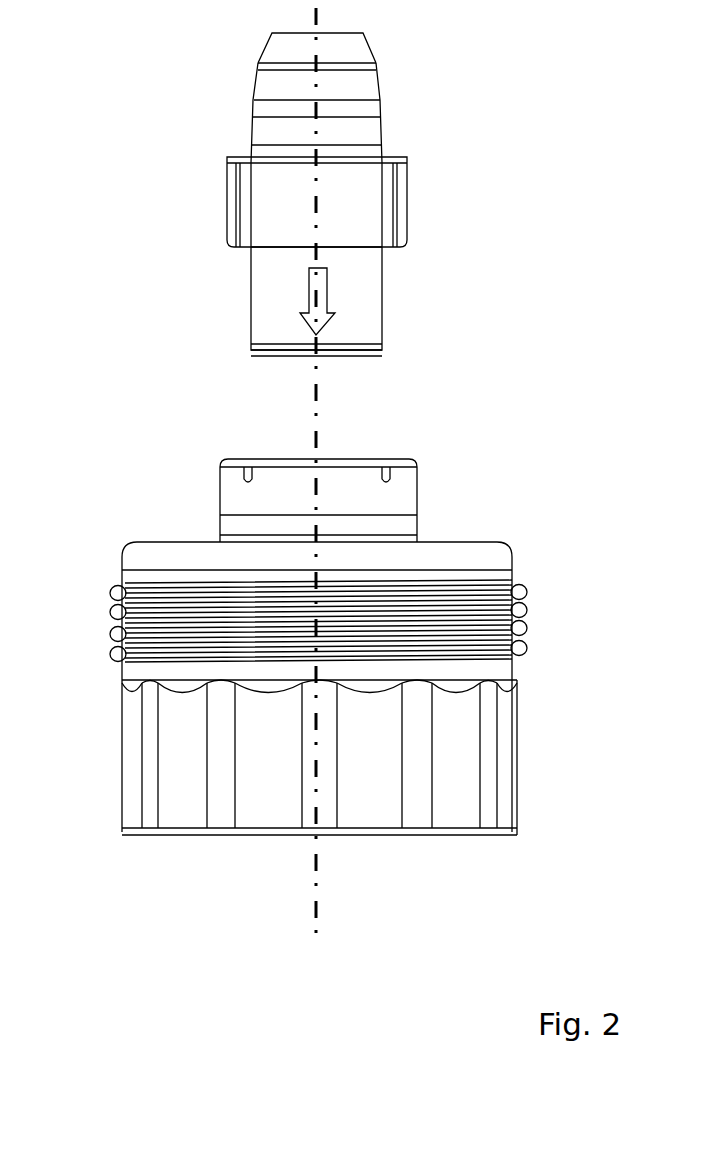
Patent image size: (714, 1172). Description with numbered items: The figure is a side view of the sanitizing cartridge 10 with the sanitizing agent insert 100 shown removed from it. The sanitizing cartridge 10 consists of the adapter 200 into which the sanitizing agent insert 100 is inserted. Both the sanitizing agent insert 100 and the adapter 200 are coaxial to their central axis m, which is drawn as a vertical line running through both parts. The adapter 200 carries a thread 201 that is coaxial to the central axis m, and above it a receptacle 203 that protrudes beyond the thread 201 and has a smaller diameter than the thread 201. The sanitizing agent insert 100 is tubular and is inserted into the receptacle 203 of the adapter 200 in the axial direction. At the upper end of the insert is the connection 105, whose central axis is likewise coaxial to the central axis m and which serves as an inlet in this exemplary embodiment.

The sanitizing cartridge 10 is at (178, 875).
The sanitizing agent insert 100 is at (401, 188).
The connection 105 is at (368, 45).
The adapter 200 is at (468, 738).
The thread 201 is at (512, 608).
The receptacle 203 is at (390, 495).
The central axis m is at (320, 412).